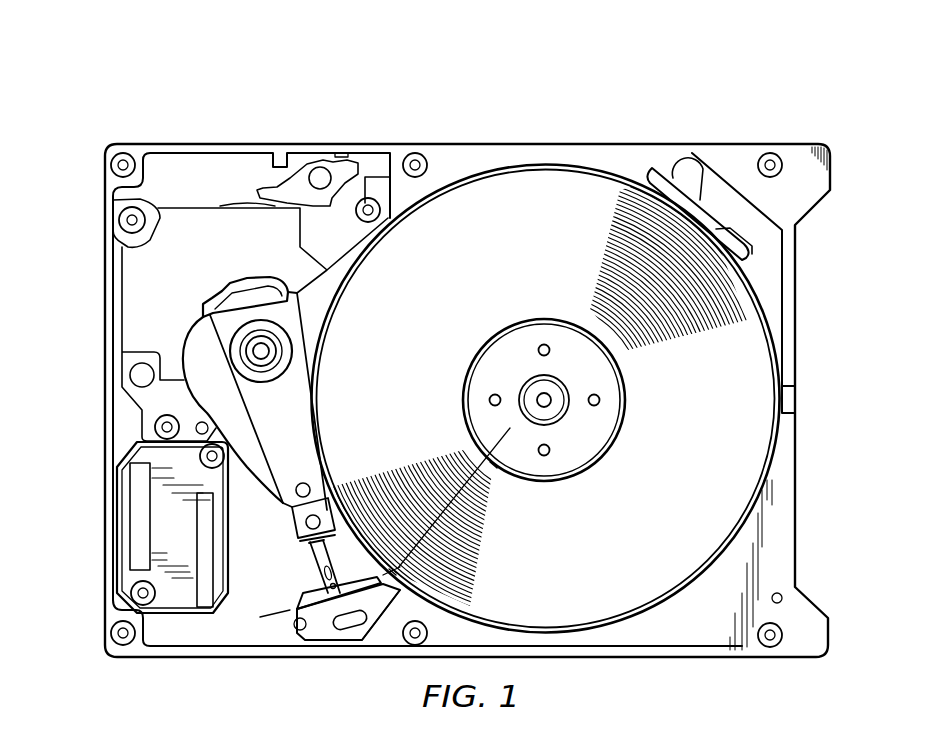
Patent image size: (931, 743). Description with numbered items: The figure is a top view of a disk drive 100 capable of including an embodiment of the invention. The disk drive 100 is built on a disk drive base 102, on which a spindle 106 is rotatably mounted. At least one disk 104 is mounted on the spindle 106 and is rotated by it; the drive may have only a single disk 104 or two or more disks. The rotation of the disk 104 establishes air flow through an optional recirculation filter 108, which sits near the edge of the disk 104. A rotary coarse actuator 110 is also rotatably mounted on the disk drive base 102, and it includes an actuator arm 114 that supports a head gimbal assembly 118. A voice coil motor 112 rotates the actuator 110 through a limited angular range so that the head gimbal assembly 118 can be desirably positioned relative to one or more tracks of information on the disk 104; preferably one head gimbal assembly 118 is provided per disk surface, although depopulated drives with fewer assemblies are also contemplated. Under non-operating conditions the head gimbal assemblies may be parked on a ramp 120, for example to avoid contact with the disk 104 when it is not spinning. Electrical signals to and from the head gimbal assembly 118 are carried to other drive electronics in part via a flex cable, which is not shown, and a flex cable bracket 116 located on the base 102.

The disk drive 100 is at (220, 62).
The disk drive base 102 is at (788, 494).
The disk 104 is at (548, 245).
The spindle 106 is at (602, 433).
The recirculation filter 108 is at (685, 198).
The rotary coarse actuator 110 is at (290, 316).
The voice coil motor 112 is at (142, 282).
The actuator arm 114 is at (291, 479).
The flex cable bracket 116 is at (178, 545).
The head gimbal assembly 118 is at (320, 566).
The ramp 120 is at (322, 628).